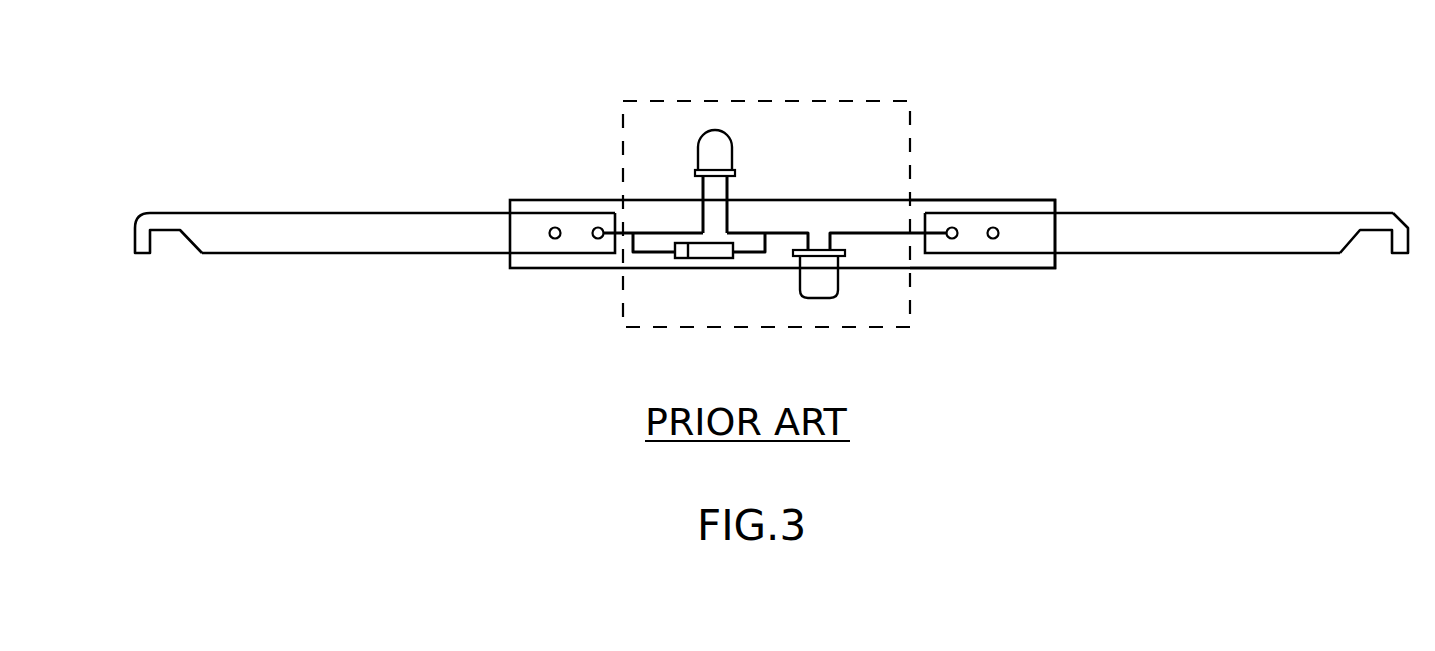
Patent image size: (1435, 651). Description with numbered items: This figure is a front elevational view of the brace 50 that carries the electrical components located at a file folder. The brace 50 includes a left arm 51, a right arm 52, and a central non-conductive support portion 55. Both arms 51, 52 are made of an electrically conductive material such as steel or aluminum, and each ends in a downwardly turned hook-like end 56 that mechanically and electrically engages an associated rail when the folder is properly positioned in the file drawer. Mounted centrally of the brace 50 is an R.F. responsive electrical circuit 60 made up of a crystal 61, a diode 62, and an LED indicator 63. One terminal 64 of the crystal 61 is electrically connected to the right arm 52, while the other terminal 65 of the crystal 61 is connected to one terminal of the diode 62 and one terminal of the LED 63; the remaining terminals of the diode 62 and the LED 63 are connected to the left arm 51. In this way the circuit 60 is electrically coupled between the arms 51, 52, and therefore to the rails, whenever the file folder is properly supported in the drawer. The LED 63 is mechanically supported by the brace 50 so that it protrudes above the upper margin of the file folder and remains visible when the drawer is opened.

The brace 50 is at (448, 198).
The left arm 51 is at (262, 235).
The right arm 52 is at (1273, 240).
The central non-conductive support portion 55 is at (633, 207).
The hook-like end 56 is at (165, 232).
The R.F. responsive electrical circuit 60 is at (833, 101).
The crystal 61 is at (822, 277).
The diode 62 is at (710, 262).
The LED indicator 63 is at (720, 153).
The terminal of crystal 64 is at (898, 210).
The other terminal of crystal 65 is at (773, 230).